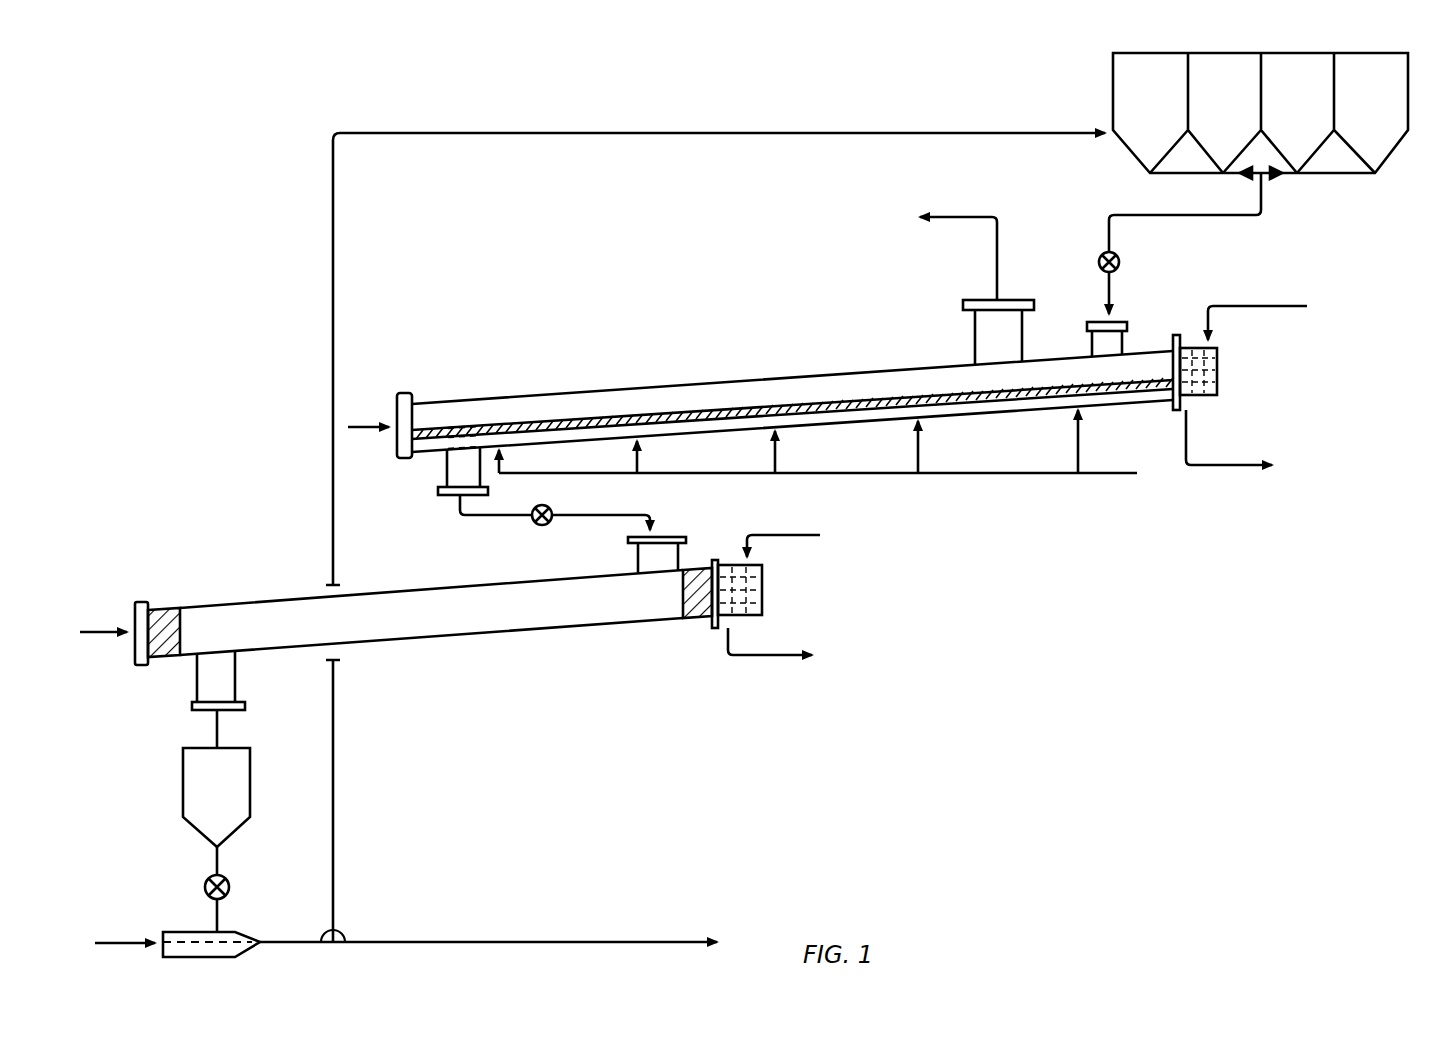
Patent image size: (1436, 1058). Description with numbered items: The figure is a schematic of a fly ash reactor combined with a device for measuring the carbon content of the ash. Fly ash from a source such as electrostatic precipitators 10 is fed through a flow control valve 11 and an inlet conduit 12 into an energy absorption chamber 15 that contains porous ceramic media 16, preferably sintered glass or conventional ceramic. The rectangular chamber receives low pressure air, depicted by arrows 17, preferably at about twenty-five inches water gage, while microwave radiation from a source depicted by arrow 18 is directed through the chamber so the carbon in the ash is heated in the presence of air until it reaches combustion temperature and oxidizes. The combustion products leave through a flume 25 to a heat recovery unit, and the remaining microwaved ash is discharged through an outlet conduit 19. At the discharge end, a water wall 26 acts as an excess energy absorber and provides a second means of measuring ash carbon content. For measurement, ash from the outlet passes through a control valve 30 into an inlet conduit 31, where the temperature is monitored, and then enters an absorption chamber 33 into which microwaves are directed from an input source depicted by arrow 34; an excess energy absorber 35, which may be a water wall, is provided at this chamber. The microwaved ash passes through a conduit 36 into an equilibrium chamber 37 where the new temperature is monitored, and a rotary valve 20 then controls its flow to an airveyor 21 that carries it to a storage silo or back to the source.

The electrostatic precipitators 10 is at (1392, 162).
The flow control valve 11 is at (1120, 262).
The inlet conduit 12 is at (1122, 345).
The energy absorption chamber 15 is at (705, 387).
The porous ceramic media 16 is at (540, 420).
The low pressure air 17 is at (499, 462).
The microwave source 18 is at (367, 425).
The outlet conduit 19 is at (447, 470).
The rotary valve 20 is at (229, 884).
The airveyor 21 is at (178, 932).
The flume 25 is at (1020, 332).
The water wall 26 is at (1217, 372).
The control valve 30 is at (550, 507).
The inlet conduit 31 is at (678, 562).
The absorption chamber 33 is at (460, 602).
The microwave input source 34 is at (100, 625).
The excess energy absorber 35 is at (762, 590).
The conduit 36 is at (235, 685).
The equilibrium chamber 37 is at (240, 785).